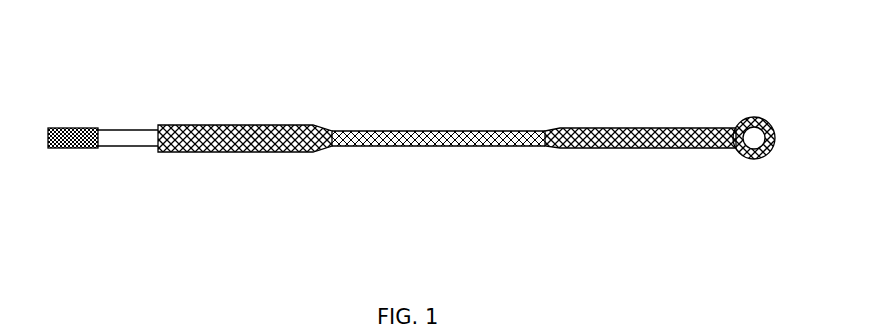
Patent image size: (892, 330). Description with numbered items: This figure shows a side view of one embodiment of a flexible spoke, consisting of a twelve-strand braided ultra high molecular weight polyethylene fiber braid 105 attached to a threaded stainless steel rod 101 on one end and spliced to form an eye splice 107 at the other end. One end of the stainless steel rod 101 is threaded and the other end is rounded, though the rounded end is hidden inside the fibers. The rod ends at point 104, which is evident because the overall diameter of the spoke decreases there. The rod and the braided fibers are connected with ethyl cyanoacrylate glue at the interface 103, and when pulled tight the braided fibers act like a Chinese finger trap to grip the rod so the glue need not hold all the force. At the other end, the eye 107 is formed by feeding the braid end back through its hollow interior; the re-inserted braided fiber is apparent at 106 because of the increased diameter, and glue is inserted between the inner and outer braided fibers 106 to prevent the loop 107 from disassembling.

The threaded stainless steel rod 101 is at (426, 108).
The glued interface between rod and braided fibers 103 is at (424, 106).
The end point of stainless steel rod 104 is at (424, 108).
The UHMWPE fiber braid 105 is at (504, 96).
The re-inserted braided fiber 106 is at (424, 106).
The eye splice 107 is at (424, 109).